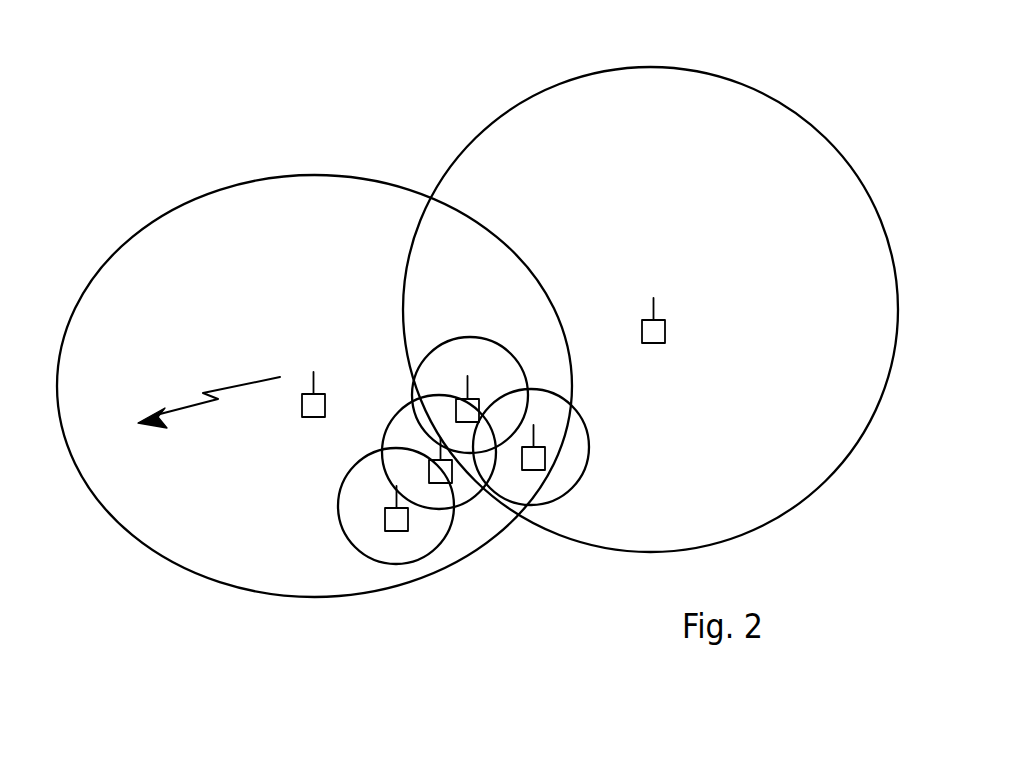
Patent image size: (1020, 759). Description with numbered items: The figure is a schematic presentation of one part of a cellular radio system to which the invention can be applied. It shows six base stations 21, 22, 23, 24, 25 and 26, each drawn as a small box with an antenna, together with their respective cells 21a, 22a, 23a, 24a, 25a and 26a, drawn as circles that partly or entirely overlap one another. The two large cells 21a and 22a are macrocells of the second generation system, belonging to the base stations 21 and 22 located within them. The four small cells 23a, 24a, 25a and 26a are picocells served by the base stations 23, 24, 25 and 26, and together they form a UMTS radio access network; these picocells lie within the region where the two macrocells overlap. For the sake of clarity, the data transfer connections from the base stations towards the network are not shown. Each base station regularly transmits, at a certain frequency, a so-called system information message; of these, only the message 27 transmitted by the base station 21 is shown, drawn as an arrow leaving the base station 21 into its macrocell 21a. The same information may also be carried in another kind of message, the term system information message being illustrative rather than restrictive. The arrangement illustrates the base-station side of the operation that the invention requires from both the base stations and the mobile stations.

The base station 21 is at (303, 395).
The cell 21a is at (100, 263).
The base station 22 is at (642, 322).
The cell 22a is at (713, 72).
The base station 23 is at (395, 531).
The cell 23a is at (423, 558).
The base station 24 is at (452, 480).
The cell 24a is at (483, 483).
The base station 25 is at (470, 422).
The cell 25a is at (519, 429).
The base station 26 is at (543, 466).
The cell 26a is at (579, 472).
The system information message 27 is at (218, 392).